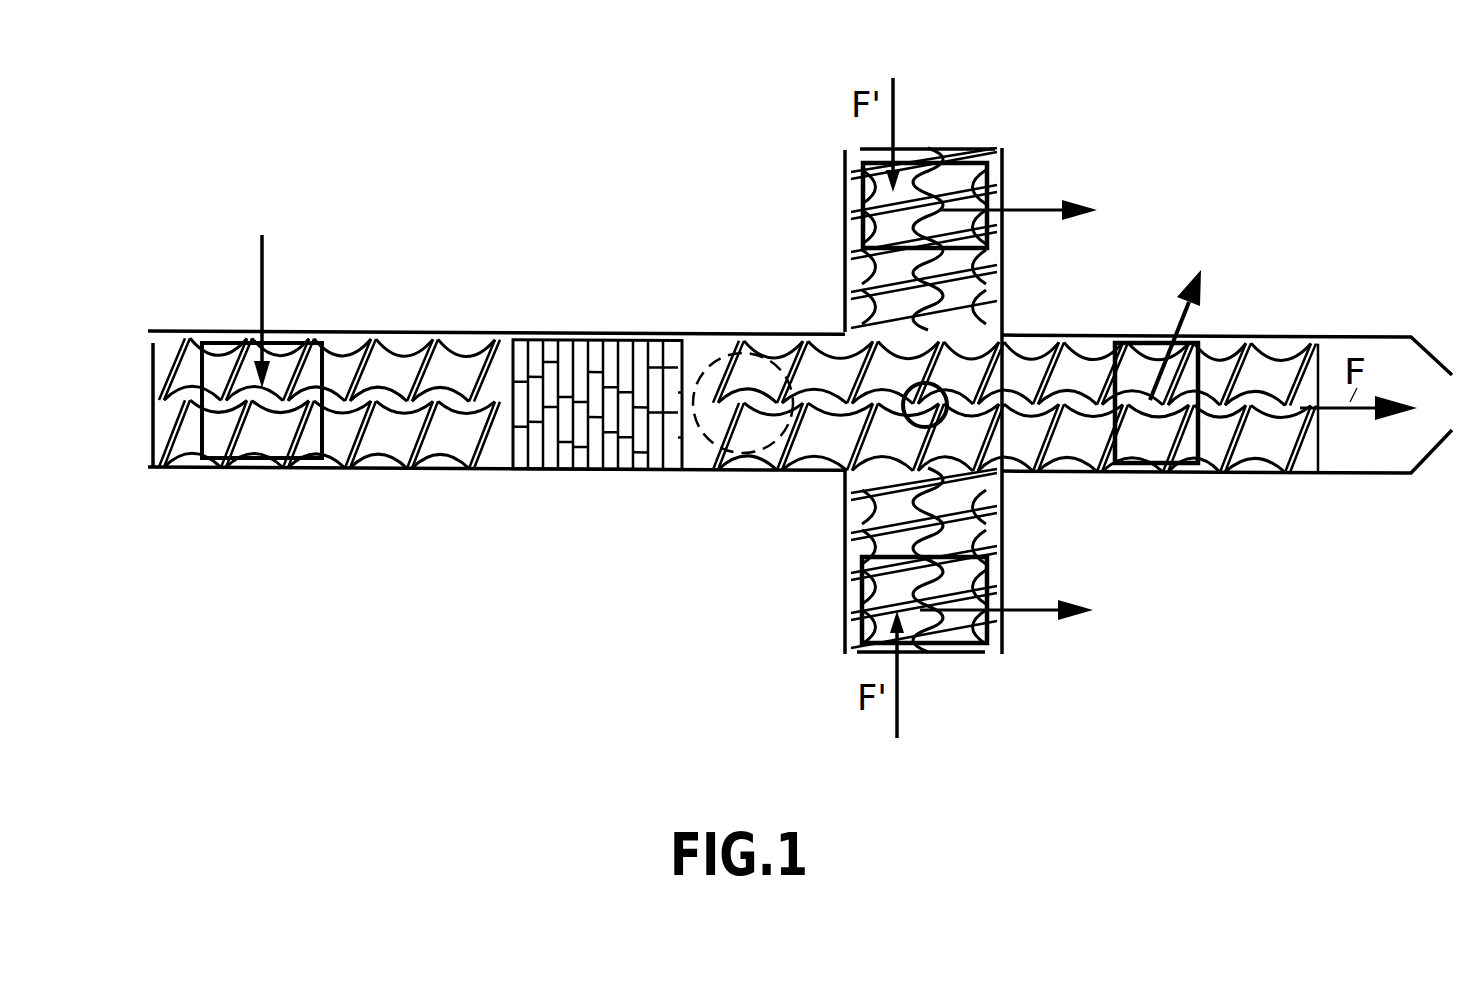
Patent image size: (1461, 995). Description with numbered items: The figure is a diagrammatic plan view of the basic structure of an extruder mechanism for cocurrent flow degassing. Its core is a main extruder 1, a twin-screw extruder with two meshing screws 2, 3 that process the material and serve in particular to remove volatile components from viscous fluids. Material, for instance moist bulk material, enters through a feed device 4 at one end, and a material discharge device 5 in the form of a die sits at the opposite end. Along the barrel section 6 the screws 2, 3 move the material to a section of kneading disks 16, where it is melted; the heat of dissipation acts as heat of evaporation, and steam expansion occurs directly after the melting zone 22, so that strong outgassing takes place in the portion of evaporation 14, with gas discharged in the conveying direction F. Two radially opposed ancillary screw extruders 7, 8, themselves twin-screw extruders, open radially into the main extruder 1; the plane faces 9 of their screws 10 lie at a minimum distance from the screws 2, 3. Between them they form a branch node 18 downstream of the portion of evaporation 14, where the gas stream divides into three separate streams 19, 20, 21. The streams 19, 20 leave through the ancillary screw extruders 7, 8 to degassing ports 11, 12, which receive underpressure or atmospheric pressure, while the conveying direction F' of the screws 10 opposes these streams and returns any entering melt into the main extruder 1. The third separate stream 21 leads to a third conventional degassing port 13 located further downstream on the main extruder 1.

The main extruder 1 is at (436, 322).
The screw 2 is at (1259, 375).
The screw 3 is at (1259, 440).
The feed device 4 is at (262, 290).
The material discharge device 5 is at (1415, 432).
The barrel outlet section 6 is at (1079, 336).
The ancillary screw extruder 7 is at (830, 181).
The ancillary screw extruder 8 is at (832, 618).
The faces 9 is at (883, 332).
The screws 10 is at (868, 280).
The degassing port 11 is at (950, 162).
The degassing port 12 is at (958, 650).
The third degassing port 13 is at (1143, 462).
The portion of evaporation 14 is at (730, 425).
The kneading disks 16 is at (607, 380).
The branch node 18 is at (905, 418).
The separate stream 19 is at (1037, 208).
The separate stream 20 is at (1040, 615).
The third separate stream 21 is at (1178, 312).
The melting zone 22 is at (612, 440).